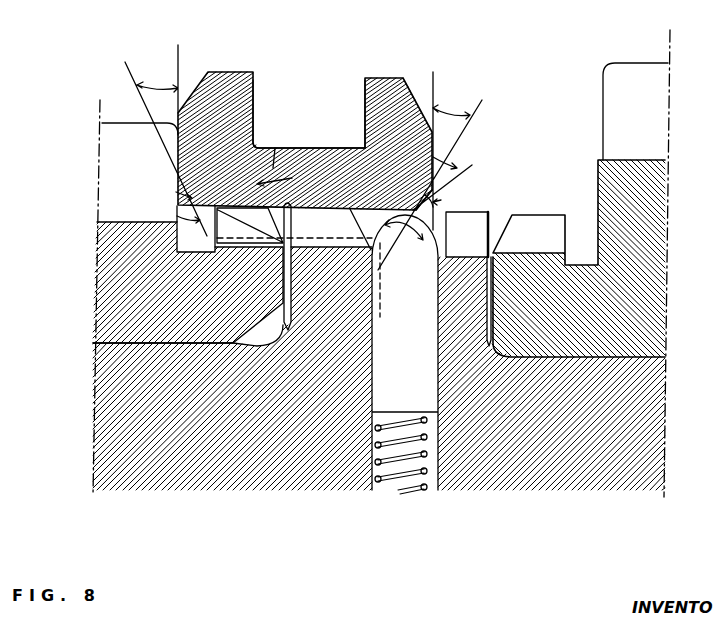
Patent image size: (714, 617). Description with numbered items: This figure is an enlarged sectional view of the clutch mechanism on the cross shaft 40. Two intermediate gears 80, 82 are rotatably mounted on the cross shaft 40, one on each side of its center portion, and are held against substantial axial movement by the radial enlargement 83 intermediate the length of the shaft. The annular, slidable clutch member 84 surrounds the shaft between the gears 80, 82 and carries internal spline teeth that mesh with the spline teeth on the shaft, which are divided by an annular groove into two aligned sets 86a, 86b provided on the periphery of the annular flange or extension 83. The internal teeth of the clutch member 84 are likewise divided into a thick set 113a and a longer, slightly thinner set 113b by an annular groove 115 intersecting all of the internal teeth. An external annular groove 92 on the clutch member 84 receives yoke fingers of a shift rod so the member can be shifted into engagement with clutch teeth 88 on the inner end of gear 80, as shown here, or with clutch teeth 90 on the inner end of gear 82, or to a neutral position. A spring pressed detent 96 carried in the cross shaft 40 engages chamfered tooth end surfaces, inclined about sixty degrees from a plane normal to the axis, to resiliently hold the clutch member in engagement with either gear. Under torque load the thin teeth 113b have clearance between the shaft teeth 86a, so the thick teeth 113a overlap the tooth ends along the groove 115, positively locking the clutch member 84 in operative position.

The cross shaft 40 is at (92, 375).
The intermediate gear 80 is at (121, 308).
The intermediate gear 82 is at (608, 133).
The radial enlargement 83 is at (336, 266).
The slidable clutch member 84 is at (242, 64).
The spline clutch teeth set 86a is at (378, 230).
The spline clutch teeth set 86b is at (483, 218).
The clutch teeth 88 is at (223, 229).
The clutch teeth 90 is at (528, 222).
The annular groove 92 is at (320, 99).
The spring pressed detent 96 is at (398, 367).
The internal clutch teeth set 113a is at (217, 209).
The internal clutch teeth set 113b is at (380, 282).
The annular groove 115 is at (289, 219).